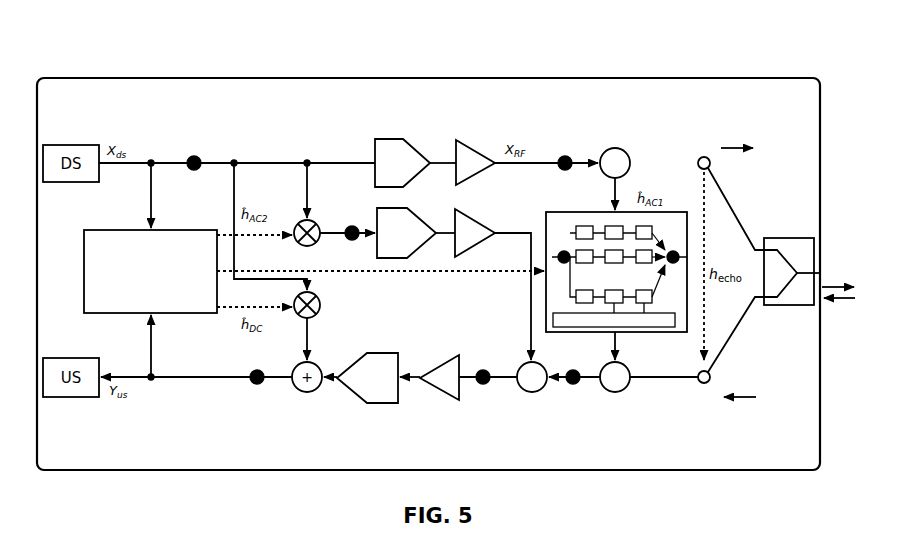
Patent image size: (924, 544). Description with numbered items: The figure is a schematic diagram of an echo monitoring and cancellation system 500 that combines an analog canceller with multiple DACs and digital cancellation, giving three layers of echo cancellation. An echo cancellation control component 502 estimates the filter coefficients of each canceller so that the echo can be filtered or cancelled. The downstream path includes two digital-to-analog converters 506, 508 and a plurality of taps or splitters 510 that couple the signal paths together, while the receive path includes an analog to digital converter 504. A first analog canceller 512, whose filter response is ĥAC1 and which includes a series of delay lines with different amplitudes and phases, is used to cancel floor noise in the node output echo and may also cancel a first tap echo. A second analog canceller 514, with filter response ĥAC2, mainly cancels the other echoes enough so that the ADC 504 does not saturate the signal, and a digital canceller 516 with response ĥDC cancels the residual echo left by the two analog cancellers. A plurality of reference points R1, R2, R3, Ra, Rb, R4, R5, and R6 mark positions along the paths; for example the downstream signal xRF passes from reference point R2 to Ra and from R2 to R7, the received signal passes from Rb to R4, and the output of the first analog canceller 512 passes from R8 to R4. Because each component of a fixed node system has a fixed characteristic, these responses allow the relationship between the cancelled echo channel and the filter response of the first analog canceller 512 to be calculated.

The echo monitoring and cancellation system 500 is at (146, 66).
The echo cancellation control component 502 is at (118, 230).
The analog to digital converter (ADC) 504 is at (380, 353).
The digital-to-analog converter (DAC) 506 is at (388, 139).
The digital-to-analog converter (DAC) 508 is at (430, 212).
The tap or splitter 510 is at (612, 148).
The first analog canceller (A-EC#1) 512 is at (616, 253).
The second analog canceller (A-EC#2) 514 is at (296, 222).
The digital canceller (D-EC) 516 is at (316, 314).
The reference point R1 is at (191, 154).
The reference point R2 is at (562, 154).
The reference point R3 is at (349, 245).
The reference point R4 is at (571, 389).
The reference point R5 is at (486, 389).
The reference point R6 is at (253, 389).
The reference point R7 is at (559, 242).
The reference point R8 is at (670, 242).
The reference point Ra is at (702, 154).
The reference point Rb is at (699, 389).